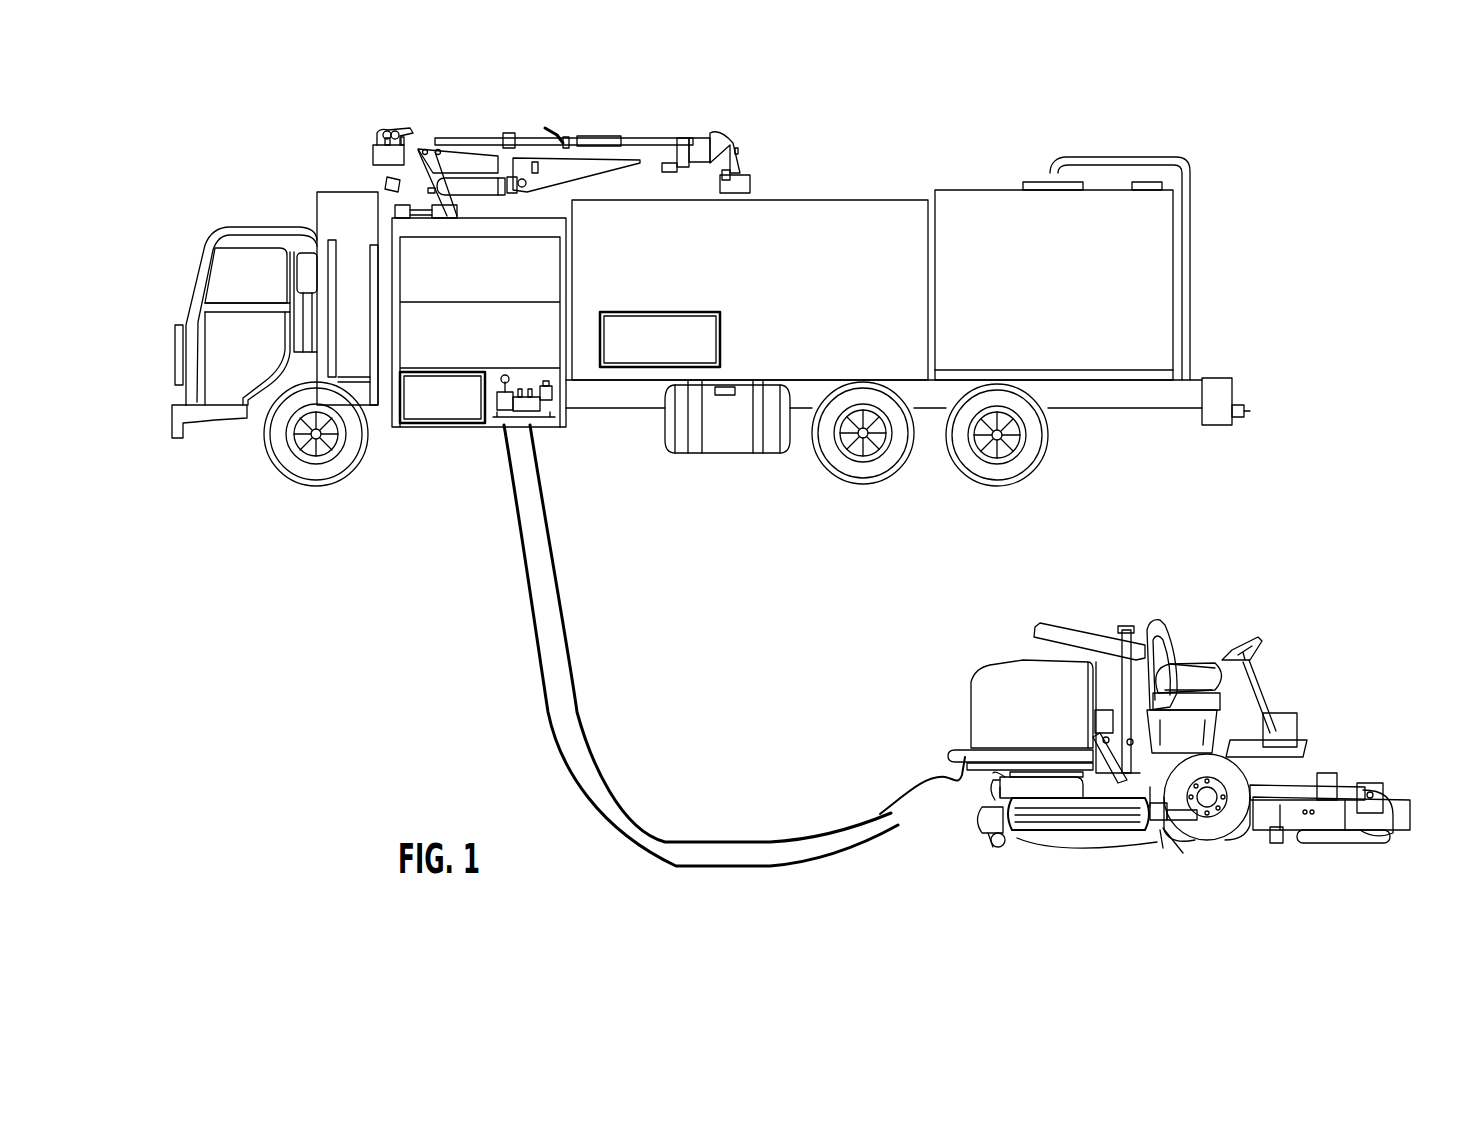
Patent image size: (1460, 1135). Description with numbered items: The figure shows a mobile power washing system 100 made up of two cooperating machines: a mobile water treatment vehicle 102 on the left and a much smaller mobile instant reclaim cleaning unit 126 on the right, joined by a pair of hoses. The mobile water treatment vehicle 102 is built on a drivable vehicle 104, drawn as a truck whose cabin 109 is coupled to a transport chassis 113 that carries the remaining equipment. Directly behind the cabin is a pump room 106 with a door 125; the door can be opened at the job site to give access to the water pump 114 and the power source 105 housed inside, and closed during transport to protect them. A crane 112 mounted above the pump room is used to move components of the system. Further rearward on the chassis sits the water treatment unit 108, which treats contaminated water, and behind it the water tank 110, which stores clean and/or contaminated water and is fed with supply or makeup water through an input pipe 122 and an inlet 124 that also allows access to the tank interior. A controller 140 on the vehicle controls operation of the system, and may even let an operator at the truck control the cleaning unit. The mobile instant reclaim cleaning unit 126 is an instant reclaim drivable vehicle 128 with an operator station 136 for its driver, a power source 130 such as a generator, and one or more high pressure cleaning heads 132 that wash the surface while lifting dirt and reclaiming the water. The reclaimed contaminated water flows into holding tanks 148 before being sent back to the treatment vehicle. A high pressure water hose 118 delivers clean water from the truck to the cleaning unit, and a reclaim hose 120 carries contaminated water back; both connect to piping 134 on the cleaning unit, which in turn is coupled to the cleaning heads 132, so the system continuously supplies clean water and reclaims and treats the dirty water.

The mobile power washing system 100 is at (248, 691).
The mobile water treatment vehicle 102 is at (1249, 141).
The drivable vehicle 104 is at (182, 235).
The power source 105 is at (443, 410).
The pump room 106 is at (411, 228).
The water treatment unit 108 is at (783, 200).
The cabin 109 is at (232, 278).
The water tank 110 is at (1040, 345).
The crane 112 is at (527, 152).
The transport chassis 113 is at (598, 407).
The water pump 114 is at (517, 415).
The high pressure water hose 118 is at (548, 712).
The reclaim hose 120 is at (591, 748).
The input pipe 122 is at (1190, 277).
The inlet 124 is at (1040, 182).
The door 125 is at (455, 256).
The mobile instant reclaim cleaning unit 126 is at (1340, 581).
The instant reclaim drivable vehicle 128 is at (1122, 660).
The power source 130 is at (1023, 690).
The high pressure cleaning heads 132 is at (1115, 846).
The piping 134 is at (922, 797).
The operator station 136 is at (1212, 640).
The controller 140 is at (680, 367).
The holding tanks 148 is at (1047, 812).